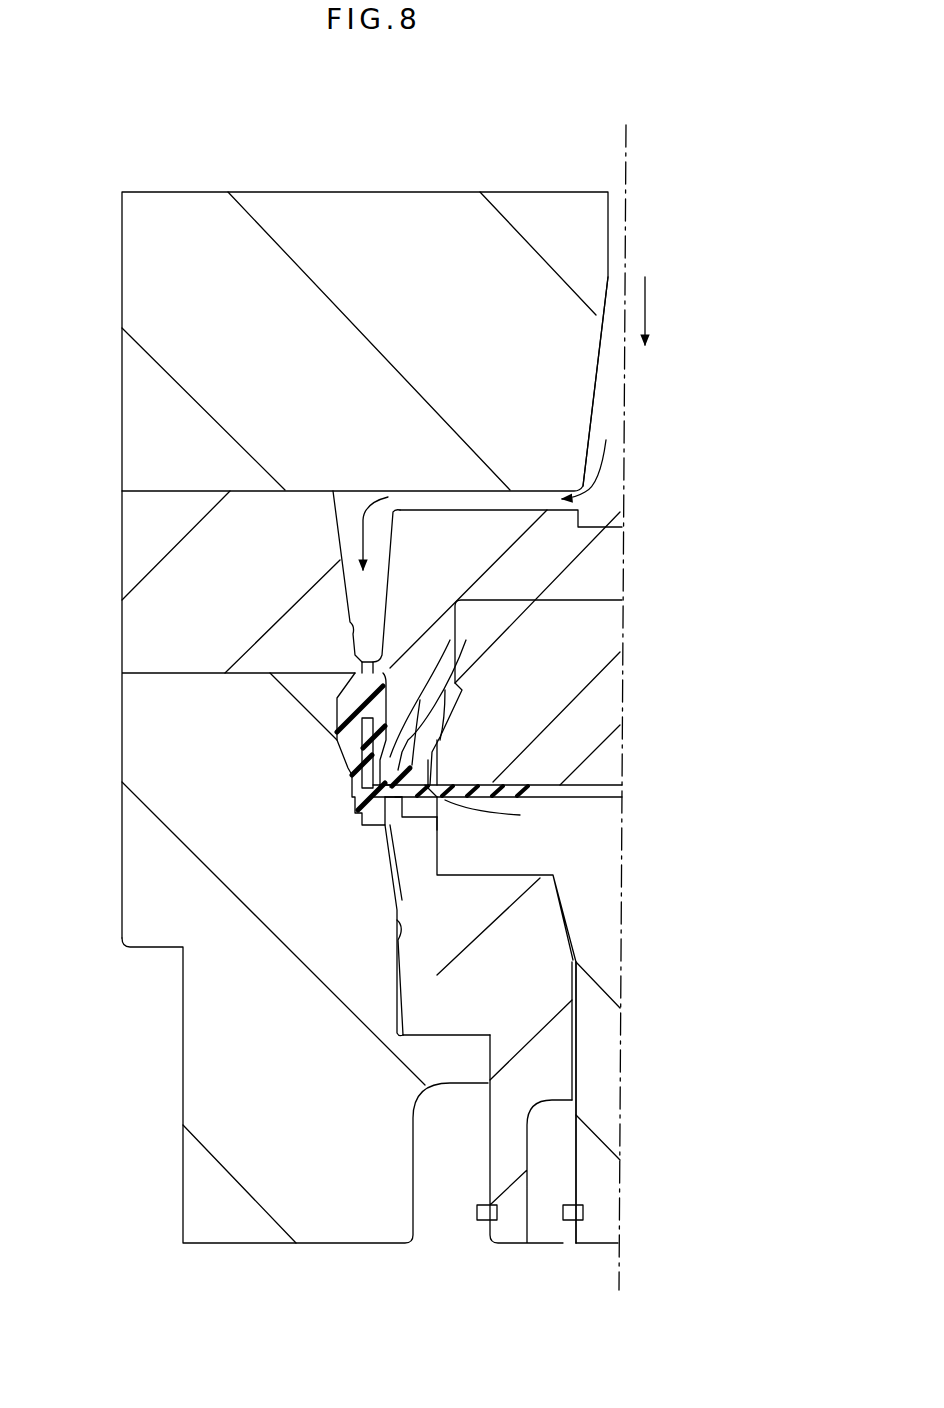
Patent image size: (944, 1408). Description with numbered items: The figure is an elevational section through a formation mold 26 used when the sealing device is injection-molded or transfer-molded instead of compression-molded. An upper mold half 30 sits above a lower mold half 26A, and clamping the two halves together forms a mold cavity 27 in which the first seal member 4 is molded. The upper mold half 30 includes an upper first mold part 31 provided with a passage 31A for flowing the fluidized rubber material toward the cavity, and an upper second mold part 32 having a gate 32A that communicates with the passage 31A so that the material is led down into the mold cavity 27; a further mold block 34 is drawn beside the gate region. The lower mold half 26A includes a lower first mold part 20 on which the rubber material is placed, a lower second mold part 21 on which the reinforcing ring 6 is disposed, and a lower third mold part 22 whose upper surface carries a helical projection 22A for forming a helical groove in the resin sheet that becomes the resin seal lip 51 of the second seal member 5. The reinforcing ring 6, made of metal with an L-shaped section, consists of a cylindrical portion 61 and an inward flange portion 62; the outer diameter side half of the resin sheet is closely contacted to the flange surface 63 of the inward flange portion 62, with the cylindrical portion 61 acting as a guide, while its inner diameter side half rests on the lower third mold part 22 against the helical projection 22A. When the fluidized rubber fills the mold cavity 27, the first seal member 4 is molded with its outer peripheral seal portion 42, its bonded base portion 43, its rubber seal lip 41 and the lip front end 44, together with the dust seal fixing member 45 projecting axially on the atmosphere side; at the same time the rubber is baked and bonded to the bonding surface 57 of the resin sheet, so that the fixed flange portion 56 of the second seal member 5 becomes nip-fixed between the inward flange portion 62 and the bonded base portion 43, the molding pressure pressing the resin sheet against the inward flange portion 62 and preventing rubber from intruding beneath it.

The upper mold half 30 is at (432, 291).
The upper first mold part 31 is at (342, 205).
The passage 31A is at (613, 398).
The first seal member 4 is at (575, 540).
The movable mold half 26 is at (573, 859).
The lower mold half 26A is at (625, 1084).
The mold cavity 27 is at (398, 686).
The upper second mold part 32 is at (138, 552).
The gate 32A is at (350, 612).
The core insert 34 is at (583, 668).
The outer peripheral seal portion 42 is at (337, 700).
The bonded base portion 43 is at (435, 705).
The lip front end 44 is at (433, 763).
The rubber seal lip 41 is at (430, 765).
The bonding surface 57 is at (430, 775).
The flange surface 63 is at (445, 787).
The helical projection 22A is at (500, 798).
The resin seal lip 51 is at (445, 817).
The cylindrical portion 61 is at (355, 797).
The fixed flange portion 56 is at (365, 795).
The reinforcing ring 6 is at (375, 810).
The dust seal fixing member 45 is at (388, 835).
The second seal member 5 is at (395, 850).
The inward flange portion 62 is at (432, 850).
The lower first mold part 20 is at (345, 1237).
The lower second mold part 21 is at (515, 1237).
The lower third mold part 22 is at (613, 1208).